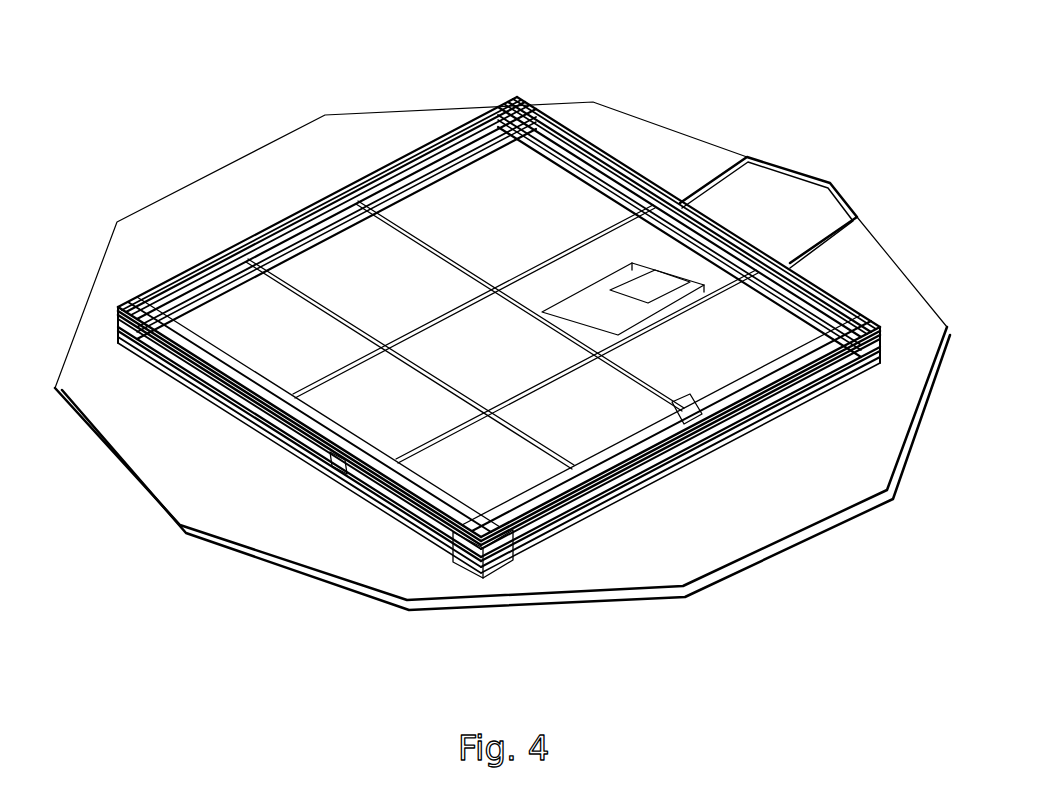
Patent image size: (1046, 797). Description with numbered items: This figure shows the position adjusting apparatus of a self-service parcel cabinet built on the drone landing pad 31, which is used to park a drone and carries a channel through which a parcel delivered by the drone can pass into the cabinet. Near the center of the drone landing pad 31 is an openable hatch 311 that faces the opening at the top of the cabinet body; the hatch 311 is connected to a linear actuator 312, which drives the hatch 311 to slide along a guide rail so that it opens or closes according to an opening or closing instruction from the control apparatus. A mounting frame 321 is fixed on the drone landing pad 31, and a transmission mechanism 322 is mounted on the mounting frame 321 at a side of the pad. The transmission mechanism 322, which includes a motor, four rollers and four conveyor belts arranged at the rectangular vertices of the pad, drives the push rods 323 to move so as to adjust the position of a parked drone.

The drone landing pad 31 is at (360, 277).
The hatch 311 is at (487, 343).
The linear actuator 312 is at (637, 290).
The mounting frame 321 is at (373, 503).
The transmission mechanism 322 is at (533, 545).
The push rods 323 is at (665, 397).